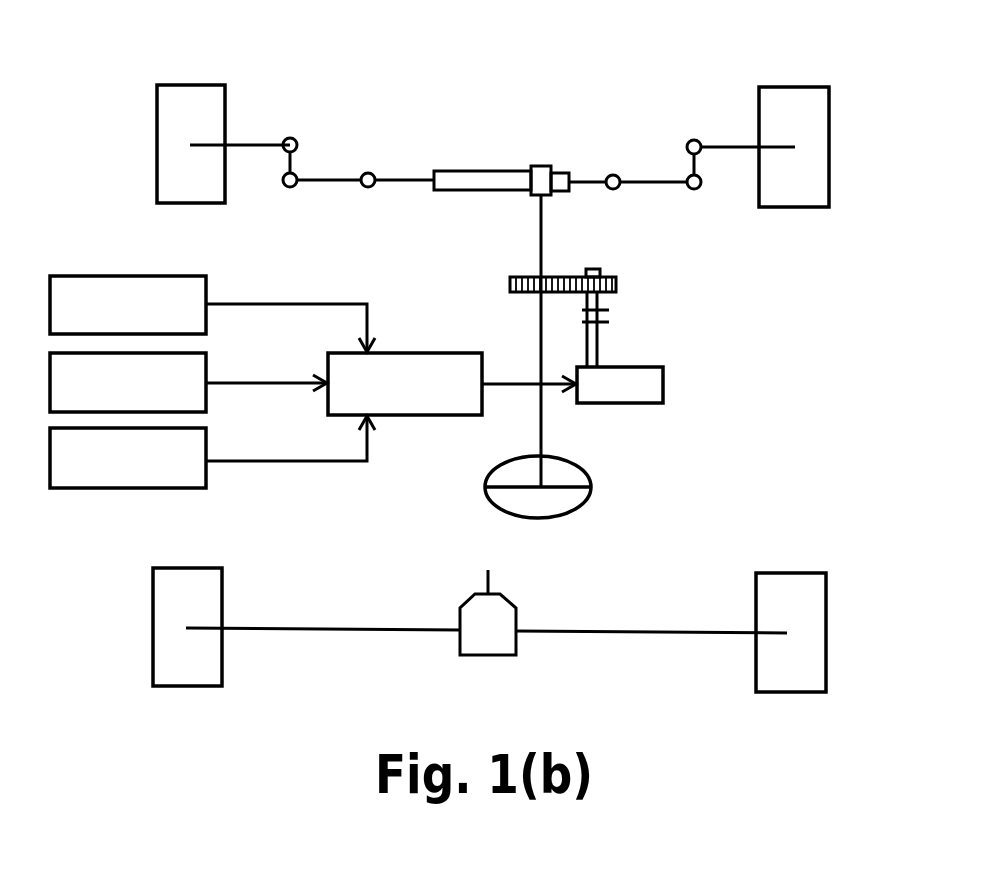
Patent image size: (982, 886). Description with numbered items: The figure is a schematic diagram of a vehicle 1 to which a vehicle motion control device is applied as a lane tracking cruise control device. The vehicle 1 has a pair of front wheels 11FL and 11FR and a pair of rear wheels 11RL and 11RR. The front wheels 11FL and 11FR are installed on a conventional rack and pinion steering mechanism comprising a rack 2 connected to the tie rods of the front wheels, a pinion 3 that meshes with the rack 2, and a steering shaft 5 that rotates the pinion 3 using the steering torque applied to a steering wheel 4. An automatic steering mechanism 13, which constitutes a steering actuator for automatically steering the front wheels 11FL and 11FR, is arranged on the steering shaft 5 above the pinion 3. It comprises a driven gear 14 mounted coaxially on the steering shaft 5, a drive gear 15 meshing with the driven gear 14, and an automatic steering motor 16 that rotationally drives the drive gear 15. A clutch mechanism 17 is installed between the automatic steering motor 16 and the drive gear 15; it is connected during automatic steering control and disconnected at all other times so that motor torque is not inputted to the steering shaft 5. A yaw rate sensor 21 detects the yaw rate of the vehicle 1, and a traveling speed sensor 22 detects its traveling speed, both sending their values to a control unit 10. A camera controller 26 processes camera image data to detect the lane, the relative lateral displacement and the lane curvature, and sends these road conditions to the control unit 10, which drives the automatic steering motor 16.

The vehicle 1 is at (645, 67).
The rack 2 is at (481, 171).
The pinion 3 is at (541, 166).
The steering wheel 4 is at (590, 475).
The steering shaft 5 is at (541, 427).
The control unit 10 is at (430, 415).
The front wheel 11FL is at (194, 85).
The front wheel 11FR is at (797, 87).
The rear wheel 11RL is at (186, 568).
The rear wheel 11RR is at (792, 573).
The automatic steering mechanism 13 is at (630, 316).
The driven gear 14 is at (517, 292).
The drive gear 15 is at (613, 277).
The automatic steering motor 16 is at (663, 385).
The clutch mechanism 17 is at (609, 311).
The yaw rate sensor 21 is at (206, 477).
The traveling speed sensor 22 is at (206, 322).
The camera controller 26 is at (206, 400).